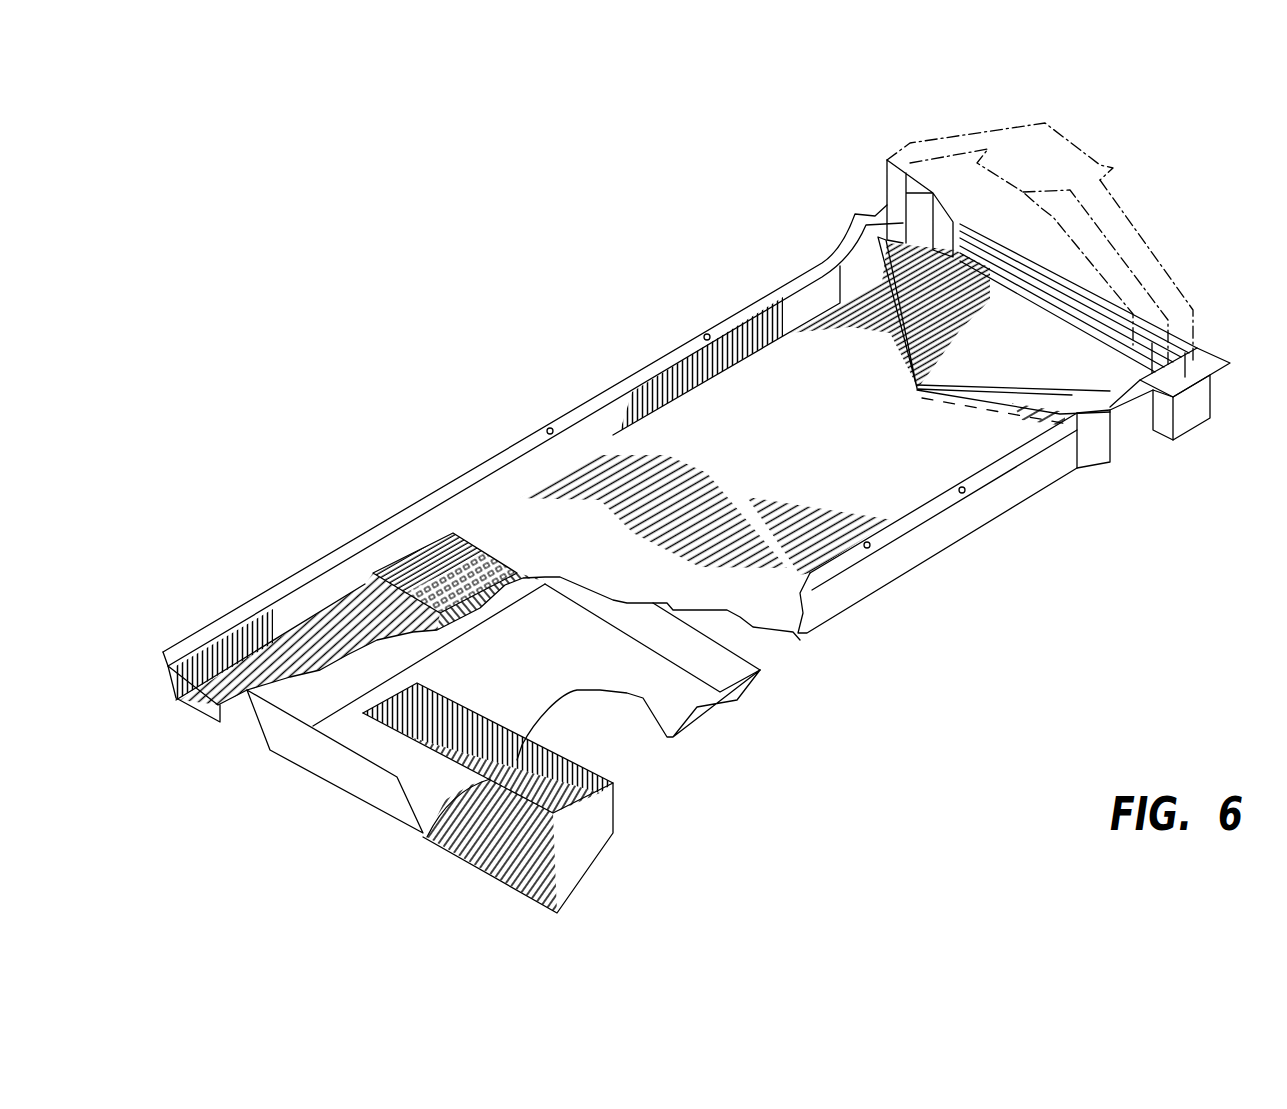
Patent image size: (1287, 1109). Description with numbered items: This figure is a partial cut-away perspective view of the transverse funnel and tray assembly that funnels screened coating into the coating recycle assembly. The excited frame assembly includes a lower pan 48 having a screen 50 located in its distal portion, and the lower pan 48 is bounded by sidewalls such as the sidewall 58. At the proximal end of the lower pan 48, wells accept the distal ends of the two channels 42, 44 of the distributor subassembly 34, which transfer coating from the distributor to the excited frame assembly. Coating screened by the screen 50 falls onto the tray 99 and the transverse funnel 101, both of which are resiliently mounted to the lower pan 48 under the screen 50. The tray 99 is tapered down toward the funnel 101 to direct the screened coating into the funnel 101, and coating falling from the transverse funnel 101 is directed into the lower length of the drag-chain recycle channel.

The distributor subassembly 34 is at (1020, 123).
The channel 42 is at (887, 172).
The channel 44 is at (1163, 268).
The lower pan 48 is at (662, 447).
The screen 50 is at (427, 560).
The sidewall 58 is at (857, 573).
The tray 99 is at (367, 795).
The transverse funnel 101 is at (593, 830).